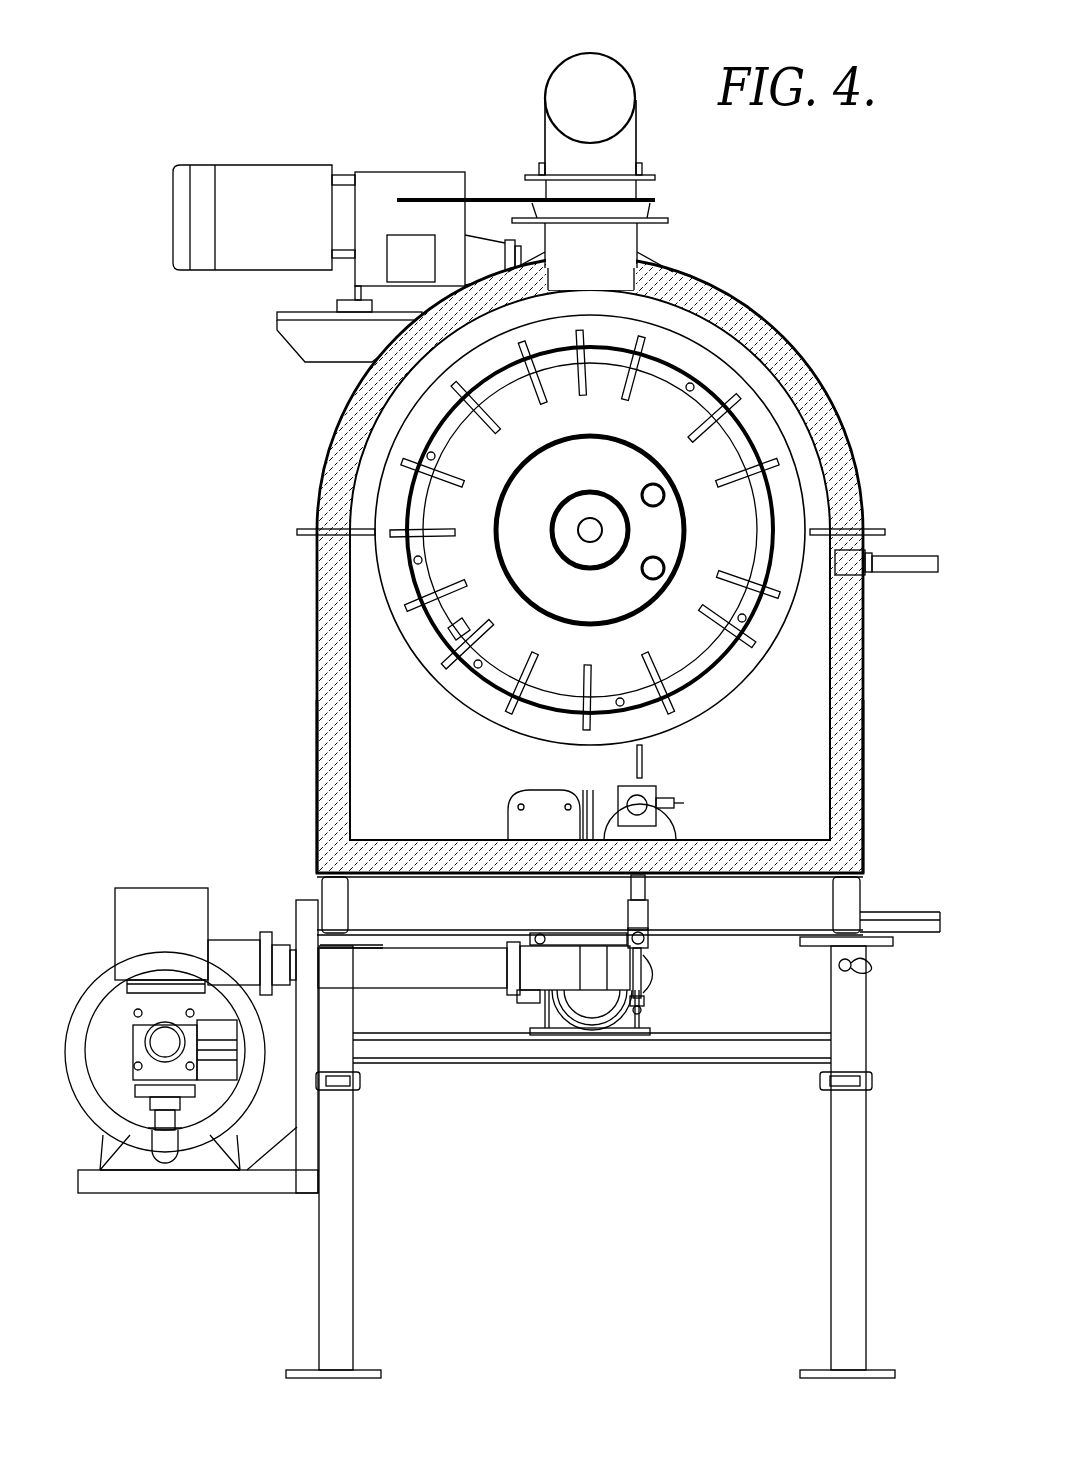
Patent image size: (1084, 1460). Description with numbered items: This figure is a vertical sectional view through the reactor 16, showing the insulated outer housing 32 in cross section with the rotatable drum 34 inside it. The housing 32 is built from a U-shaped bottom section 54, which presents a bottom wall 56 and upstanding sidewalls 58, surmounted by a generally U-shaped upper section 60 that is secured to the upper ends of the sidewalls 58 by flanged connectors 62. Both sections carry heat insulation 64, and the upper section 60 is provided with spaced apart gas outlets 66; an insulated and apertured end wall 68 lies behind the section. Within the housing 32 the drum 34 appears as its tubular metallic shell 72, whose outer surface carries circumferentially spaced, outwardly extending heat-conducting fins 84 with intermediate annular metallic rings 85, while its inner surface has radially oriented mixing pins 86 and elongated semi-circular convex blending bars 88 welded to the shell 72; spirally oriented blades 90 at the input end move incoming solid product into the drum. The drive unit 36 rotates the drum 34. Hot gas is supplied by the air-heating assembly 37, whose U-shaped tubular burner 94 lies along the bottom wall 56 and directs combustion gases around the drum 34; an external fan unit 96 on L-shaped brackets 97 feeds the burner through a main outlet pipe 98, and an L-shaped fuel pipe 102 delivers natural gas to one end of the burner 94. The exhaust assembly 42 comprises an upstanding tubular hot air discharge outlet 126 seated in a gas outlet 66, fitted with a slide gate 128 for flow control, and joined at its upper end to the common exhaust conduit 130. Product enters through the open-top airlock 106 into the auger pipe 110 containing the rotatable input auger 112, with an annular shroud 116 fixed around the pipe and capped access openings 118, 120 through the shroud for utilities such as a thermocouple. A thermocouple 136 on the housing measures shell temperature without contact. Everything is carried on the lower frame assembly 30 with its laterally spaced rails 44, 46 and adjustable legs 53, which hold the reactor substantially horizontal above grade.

The reactor 16 is at (808, 195).
The lower frame assembly 30 is at (737, 940).
The insulated outer housing 32 is at (770, 298).
The drum 34 is at (438, 707).
The drive unit 36 is at (583, 1030).
The air-heating assembly 37 is at (153, 1220).
The hot gas exhaust assembly 42 is at (642, 38).
The rail 44 is at (866, 910).
The rail 46 is at (325, 880).
The adjustable legs 53 is at (850, 1215).
The U-shaped bottom section 54 is at (312, 660).
The bottom wall 56 is at (782, 876).
The upstanding sidewalls 58 is at (318, 748).
The U-shaped upper section 60 is at (328, 432).
The flanged connectors 62 is at (320, 530).
The heat insulation 64 is at (795, 378).
The gas outlets 66 is at (610, 290).
The end wall 68 is at (800, 778).
The tubular metallic shell 72 is at (750, 682).
The heat-conducting fins 84 is at (525, 348).
The annular metallic rings 85 is at (575, 742).
The mixing pins 86 is at (487, 626).
The blending bars 88 is at (480, 410).
The spirally oriented blades 90 is at (640, 385).
The tubular burner 94 is at (513, 798).
The external fan unit 96 is at (100, 865).
The L-shaped brackets 97 is at (222, 1185).
The main outlet pipe 98 is at (435, 970).
The L-shaped fuel pipe 102 is at (590, 935).
The open-top airlock 106 is at (262, 182).
The auger pipe 110 is at (550, 520).
The input auger 112 is at (582, 517).
The annular shroud 116 is at (512, 553).
The access opening 118 is at (653, 490).
The access opening 120 is at (652, 568).
The hot air discharge outlets 126 is at (638, 225).
The slide gate 128 is at (505, 196).
The exhaust conduit 130 is at (548, 72).
The thermocouples 136 is at (900, 572).